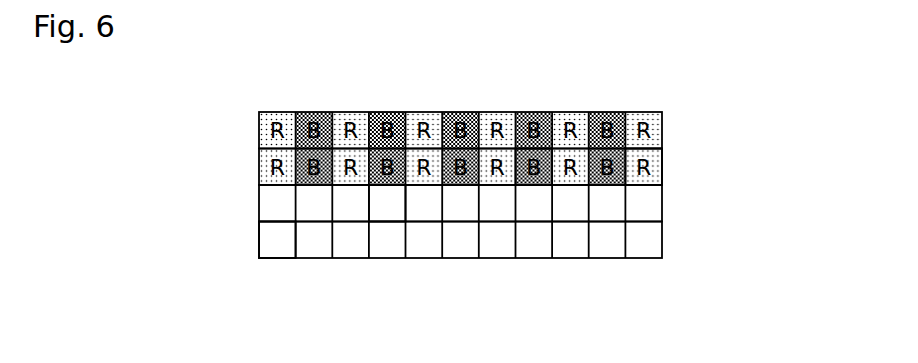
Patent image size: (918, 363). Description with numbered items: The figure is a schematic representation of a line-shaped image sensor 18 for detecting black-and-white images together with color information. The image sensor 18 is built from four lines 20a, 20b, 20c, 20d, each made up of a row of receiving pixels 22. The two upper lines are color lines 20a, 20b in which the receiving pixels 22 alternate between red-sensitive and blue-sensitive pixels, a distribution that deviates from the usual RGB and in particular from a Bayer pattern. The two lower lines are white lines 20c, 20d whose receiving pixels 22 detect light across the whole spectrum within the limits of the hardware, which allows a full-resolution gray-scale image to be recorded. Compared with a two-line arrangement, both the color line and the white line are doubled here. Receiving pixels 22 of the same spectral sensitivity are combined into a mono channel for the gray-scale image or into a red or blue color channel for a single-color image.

The image sensor 18 is at (536, 144).
The color line 20a is at (536, 132).
The color line 20b is at (536, 169).
The white line 20c is at (536, 203).
The white line 20d is at (536, 240).
The receiving pixels 22 is at (434, 291).